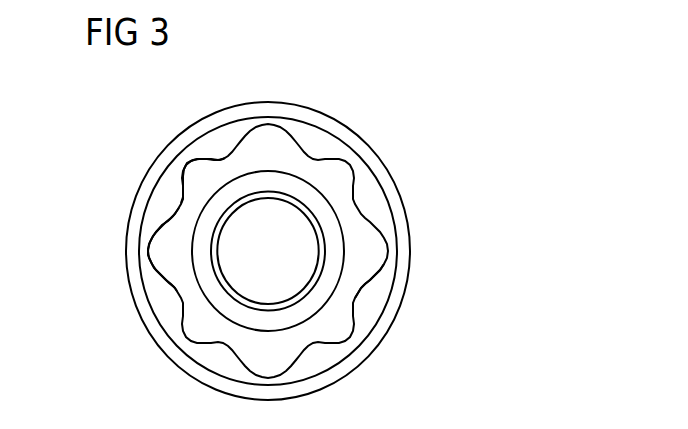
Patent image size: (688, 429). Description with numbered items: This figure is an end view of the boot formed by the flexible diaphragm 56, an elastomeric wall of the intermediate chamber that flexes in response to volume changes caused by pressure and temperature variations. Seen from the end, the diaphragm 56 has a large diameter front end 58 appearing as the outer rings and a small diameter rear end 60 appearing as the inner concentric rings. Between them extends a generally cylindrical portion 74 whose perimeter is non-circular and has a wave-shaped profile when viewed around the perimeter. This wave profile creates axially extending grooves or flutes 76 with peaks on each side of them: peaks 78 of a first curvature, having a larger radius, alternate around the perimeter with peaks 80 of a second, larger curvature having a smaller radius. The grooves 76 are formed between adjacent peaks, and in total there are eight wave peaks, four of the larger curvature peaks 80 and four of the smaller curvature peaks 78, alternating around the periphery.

The flexible diaphragm 56 is at (426, 121).
The front end 58 is at (425, 265).
The rear end 60 is at (322, 307).
The cylindrical portion 74 is at (385, 287).
The grooves 76 is at (298, 155).
The peaks of first curvature 78 is at (182, 157).
The peaks of second curvature 80 is at (147, 262).